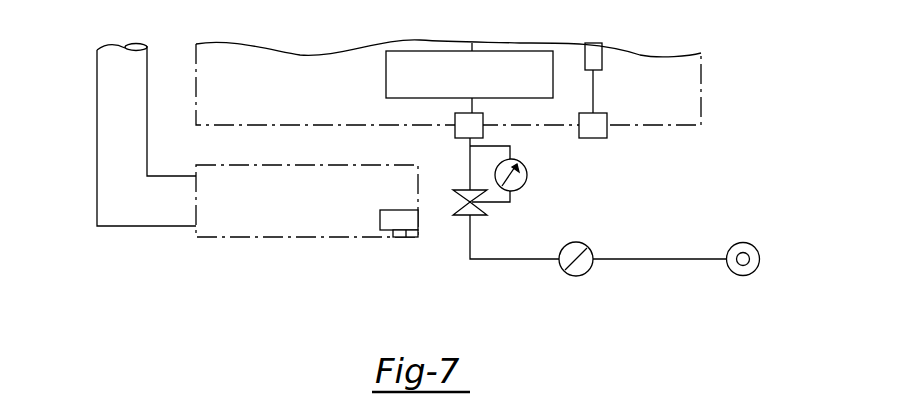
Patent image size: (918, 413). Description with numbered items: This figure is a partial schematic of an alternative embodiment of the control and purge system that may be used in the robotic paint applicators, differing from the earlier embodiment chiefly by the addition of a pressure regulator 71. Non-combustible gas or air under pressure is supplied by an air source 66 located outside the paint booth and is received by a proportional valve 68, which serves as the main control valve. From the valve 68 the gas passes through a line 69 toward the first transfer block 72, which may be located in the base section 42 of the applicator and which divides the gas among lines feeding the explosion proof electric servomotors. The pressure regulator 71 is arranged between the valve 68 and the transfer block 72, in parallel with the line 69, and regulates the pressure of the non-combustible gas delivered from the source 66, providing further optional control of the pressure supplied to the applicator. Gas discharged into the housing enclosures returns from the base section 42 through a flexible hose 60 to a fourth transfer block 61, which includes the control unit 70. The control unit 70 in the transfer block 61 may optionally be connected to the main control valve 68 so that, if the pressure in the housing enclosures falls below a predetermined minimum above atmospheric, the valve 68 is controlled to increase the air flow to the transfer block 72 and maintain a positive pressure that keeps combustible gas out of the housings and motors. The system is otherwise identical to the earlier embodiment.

The base section 42 is at (697, 107).
The flexible hose 60 is at (103, 125).
The fourth transfer block 61 is at (257, 222).
The air source 66 is at (753, 250).
The proportional valve 68 is at (483, 207).
The line 69 is at (468, 170).
The control unit 70 is at (385, 220).
The pressure regulator 71 is at (528, 182).
The first transfer block 72 is at (386, 72).